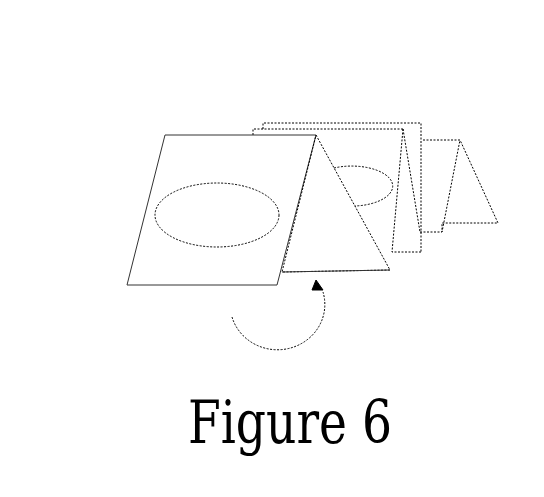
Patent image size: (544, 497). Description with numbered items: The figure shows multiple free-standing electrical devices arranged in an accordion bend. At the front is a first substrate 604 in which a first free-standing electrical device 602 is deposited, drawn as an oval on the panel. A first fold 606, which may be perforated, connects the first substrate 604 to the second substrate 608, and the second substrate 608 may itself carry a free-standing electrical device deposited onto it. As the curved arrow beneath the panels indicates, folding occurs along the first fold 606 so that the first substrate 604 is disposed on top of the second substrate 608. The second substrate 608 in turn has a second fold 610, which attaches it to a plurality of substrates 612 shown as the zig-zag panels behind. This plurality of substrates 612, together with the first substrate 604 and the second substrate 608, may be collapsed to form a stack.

The first free-standing electrical device 602 is at (175, 213).
The first substrate 604 is at (175, 158).
The first fold 606 is at (232, 134).
The second substrate 608 is at (333, 252).
The second fold 610 is at (378, 272).
The plurality of substrates 612 is at (457, 63).